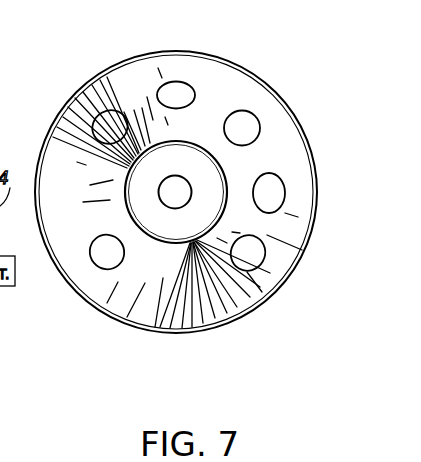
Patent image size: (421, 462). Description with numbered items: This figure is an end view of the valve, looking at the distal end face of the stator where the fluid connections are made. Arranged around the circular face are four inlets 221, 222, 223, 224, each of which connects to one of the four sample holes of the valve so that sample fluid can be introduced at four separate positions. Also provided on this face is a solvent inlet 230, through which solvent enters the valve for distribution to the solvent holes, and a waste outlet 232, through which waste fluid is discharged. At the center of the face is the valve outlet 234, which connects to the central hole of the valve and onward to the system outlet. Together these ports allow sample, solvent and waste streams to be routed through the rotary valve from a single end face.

The inlet 221 is at (260, 127).
The inlet 222 is at (262, 258).
The inlet 223 is at (110, 270).
The inlet 224 is at (100, 114).
The solvent inlet 230 is at (182, 88).
The waste outlet 232 is at (283, 177).
The valve outlet 234 is at (189, 196).